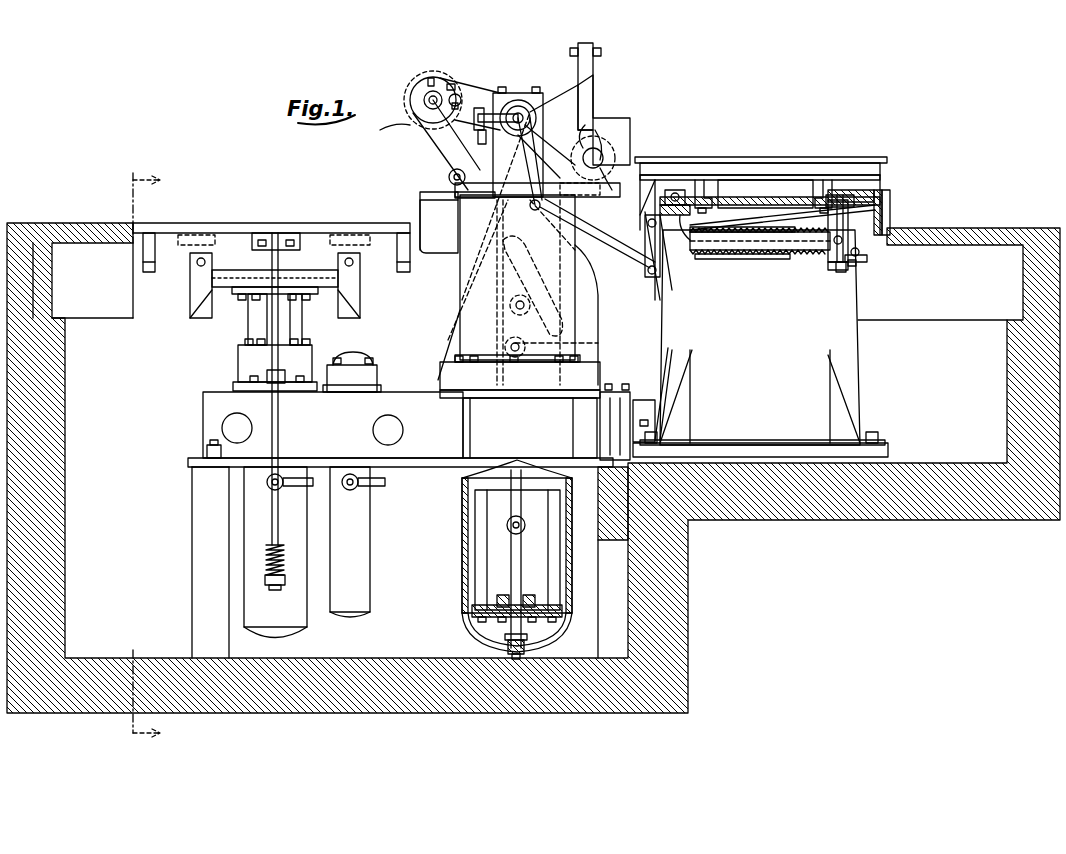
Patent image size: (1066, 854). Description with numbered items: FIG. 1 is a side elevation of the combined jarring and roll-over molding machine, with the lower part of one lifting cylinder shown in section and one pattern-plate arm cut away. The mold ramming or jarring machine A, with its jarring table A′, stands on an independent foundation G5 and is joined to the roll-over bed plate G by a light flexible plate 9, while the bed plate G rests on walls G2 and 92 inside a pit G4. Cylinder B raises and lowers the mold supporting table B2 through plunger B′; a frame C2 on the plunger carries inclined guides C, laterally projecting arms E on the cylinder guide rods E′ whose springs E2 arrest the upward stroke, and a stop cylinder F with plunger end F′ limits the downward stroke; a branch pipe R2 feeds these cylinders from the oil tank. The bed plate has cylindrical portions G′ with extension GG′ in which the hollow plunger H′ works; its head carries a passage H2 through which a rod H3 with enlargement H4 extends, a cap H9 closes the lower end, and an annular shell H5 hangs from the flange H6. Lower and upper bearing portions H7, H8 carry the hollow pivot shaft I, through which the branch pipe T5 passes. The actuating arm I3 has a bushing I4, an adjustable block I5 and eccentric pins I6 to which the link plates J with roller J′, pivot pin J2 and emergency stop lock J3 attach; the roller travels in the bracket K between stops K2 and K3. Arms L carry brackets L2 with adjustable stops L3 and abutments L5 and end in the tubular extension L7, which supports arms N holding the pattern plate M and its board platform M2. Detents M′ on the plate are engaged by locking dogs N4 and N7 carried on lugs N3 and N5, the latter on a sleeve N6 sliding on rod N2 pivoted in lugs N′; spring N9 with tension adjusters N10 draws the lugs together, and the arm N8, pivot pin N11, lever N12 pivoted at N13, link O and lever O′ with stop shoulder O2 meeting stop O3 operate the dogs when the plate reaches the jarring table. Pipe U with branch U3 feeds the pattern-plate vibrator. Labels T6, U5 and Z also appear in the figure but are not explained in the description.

The mold ramming machine A is at (762, 337).
The jarring table A′ is at (880, 172).
The cylinder B is at (262, 389).
The plunger B′ is at (275, 319).
The mold supporting table B2 is at (278, 232).
The inclined guides C is at (275, 285).
The frame C2 is at (372, 325).
The laterally projecting arms E is at (267, 375).
The rods E′ is at (275, 408).
The springs E2 is at (263, 557).
The stop cylinder F is at (370, 518).
The plunger upper end F′ is at (355, 352).
The bed plate G is at (400, 429).
The cylindrical portions G′ is at (520, 424).
The wall G2 is at (210, 562).
The pit G4 is at (368, 698).
The foundation G5 is at (800, 495).
The cylinder extension GG′ is at (462, 575).
The hollow plunger H′ is at (475, 515).
The passage H2 is at (470, 620).
The rod H3 is at (527, 558).
The enlargement H4 is at (505, 540).
The annular cylindrical shell H5 is at (575, 250).
The flange H6 is at (455, 188).
The lower bearing portion H7 is at (518, 100).
The upper bearing portion H8 is at (493, 93).
The cap H9 is at (560, 622).
The pivot I is at (540, 120).
The actuating arm I3 is at (612, 40).
The tubular bushing I4 is at (450, 84).
The angularly adjustable block I5 is at (432, 78).
The eccentric pins I6 is at (428, 100).
The link plates J is at (422, 120).
The stop engaging roller J′ is at (561, 347).
The pivot pin J2 is at (450, 172).
The emergency stop lock J3 is at (432, 222).
The bracket K is at (519, 292).
The stop K2 is at (530, 315).
The upper stop K3 is at (505, 248).
The arms L is at (546, 151).
The brackets L2 is at (580, 111).
The adjustable stops L3 is at (585, 86).
The abutments L5 is at (618, 149).
The tubular extension L7 is at (603, 134).
The pattern plate M is at (758, 157).
The lug engaging detents M′ is at (706, 180).
The board platform M2 is at (790, 158).
The arms N is at (745, 240).
The pivot lugs N′ is at (848, 235).
The rod N2 is at (868, 258).
The lug N3 is at (850, 205).
The locking dog N4 is at (878, 190).
The lug N5 is at (688, 252).
The sleeve N6 is at (775, 258).
The locking dog N7 is at (678, 205).
The rearwardly extending arm N8 is at (670, 190).
The spring N9 is at (758, 258).
The tension adjusting devices N10 is at (852, 266).
The pivot pin N11 is at (648, 180).
The lever N12 is at (662, 275).
The pivot N13 is at (665, 268).
The link O is at (625, 262).
The lever O′ is at (508, 148).
The stop shoulder O2 is at (542, 222).
The stop O3 is at (497, 289).
The branch pipe R2 is at (372, 485).
The branch pipe T5 is at (388, 127).
The shaft T6 is at (484, 144).
The pipe U is at (598, 158).
The branch U3 is at (583, 204).
The link U5 is at (586, 117).
The section line Z is at (154, 460).
The flexible plate 9 is at (622, 396).
The wall 92 is at (620, 524).